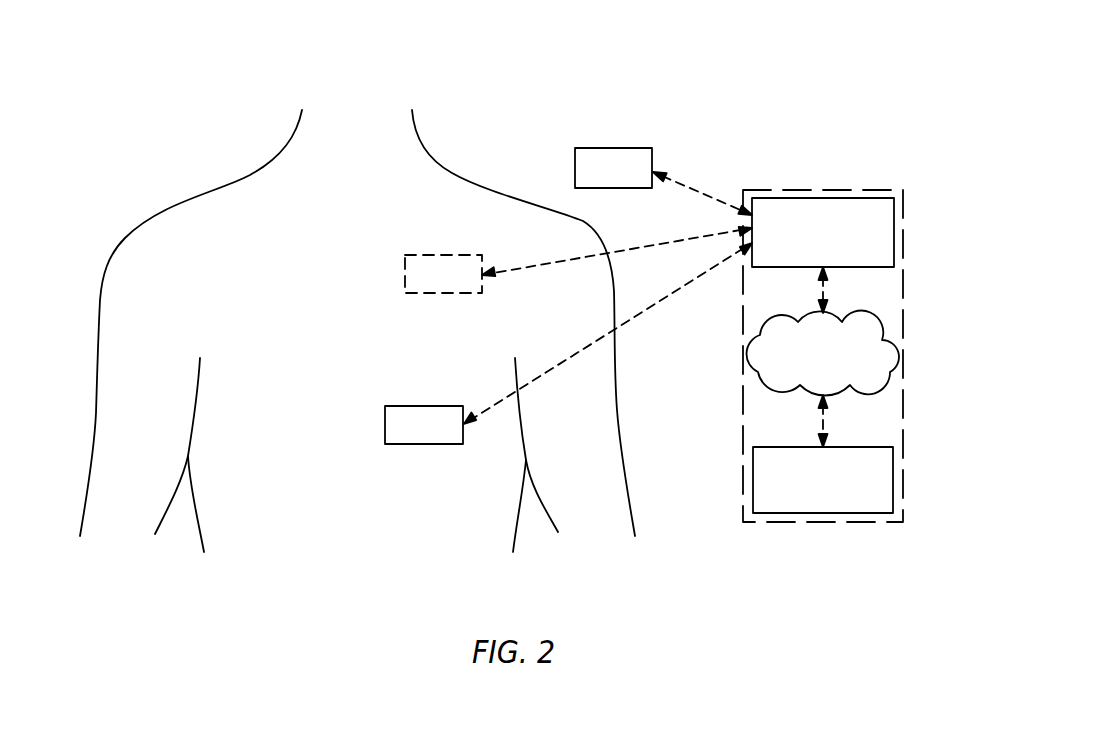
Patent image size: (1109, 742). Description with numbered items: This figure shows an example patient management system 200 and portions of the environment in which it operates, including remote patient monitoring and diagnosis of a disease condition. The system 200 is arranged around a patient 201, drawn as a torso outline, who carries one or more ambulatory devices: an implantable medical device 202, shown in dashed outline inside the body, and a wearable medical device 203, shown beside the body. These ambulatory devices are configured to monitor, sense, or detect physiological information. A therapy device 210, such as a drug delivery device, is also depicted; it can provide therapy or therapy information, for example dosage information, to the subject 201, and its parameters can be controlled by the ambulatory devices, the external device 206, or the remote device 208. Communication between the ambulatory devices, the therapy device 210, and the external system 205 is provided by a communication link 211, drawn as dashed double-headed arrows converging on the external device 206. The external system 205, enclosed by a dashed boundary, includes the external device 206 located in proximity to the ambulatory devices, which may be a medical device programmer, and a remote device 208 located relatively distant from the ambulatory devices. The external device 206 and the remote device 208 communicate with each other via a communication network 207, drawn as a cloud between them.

The patient management system 200 is at (852, 55).
The patient 201 is at (454, 171).
The implantable medical device 202 is at (445, 255).
The wearable medical device 203 is at (423, 406).
The external system 205 is at (903, 277).
The external device 206 is at (897, 217).
The communication network 207 is at (892, 333).
The remote device 208 is at (895, 465).
The therapy device 210 is at (615, 148).
The communication link 211 is at (688, 187).